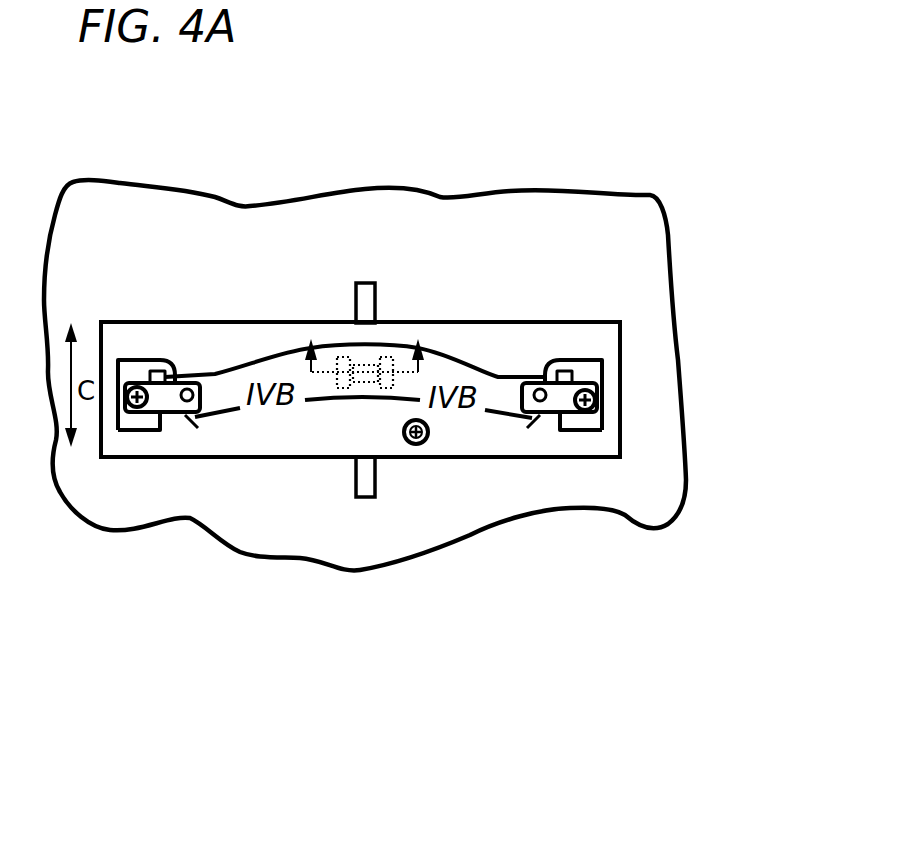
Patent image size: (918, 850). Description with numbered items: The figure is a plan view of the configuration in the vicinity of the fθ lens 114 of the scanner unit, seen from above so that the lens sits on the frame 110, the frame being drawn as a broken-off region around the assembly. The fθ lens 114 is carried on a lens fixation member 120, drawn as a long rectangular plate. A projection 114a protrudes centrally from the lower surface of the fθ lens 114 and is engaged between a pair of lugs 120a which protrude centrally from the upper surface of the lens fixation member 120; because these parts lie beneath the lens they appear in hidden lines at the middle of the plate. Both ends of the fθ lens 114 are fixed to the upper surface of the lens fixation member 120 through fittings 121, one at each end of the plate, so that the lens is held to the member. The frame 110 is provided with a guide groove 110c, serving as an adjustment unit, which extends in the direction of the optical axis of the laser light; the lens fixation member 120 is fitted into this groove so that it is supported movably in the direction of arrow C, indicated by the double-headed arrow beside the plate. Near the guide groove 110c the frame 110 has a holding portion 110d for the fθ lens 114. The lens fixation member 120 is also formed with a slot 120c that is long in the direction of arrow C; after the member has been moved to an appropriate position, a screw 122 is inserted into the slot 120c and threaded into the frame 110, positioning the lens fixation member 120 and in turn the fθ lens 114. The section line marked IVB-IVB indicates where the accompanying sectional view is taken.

The frame 110 is at (605, 218).
The guide groove 110c is at (354, 480).
The holding portion 110d is at (353, 302).
The fθ lens 114 is at (447, 368).
The projection 114a is at (367, 347).
The lens fixation member 120 is at (580, 322).
The lugs 120a is at (380, 400).
The slot 120c is at (428, 458).
The fittings 121 is at (137, 373).
The screw 122 is at (430, 445).